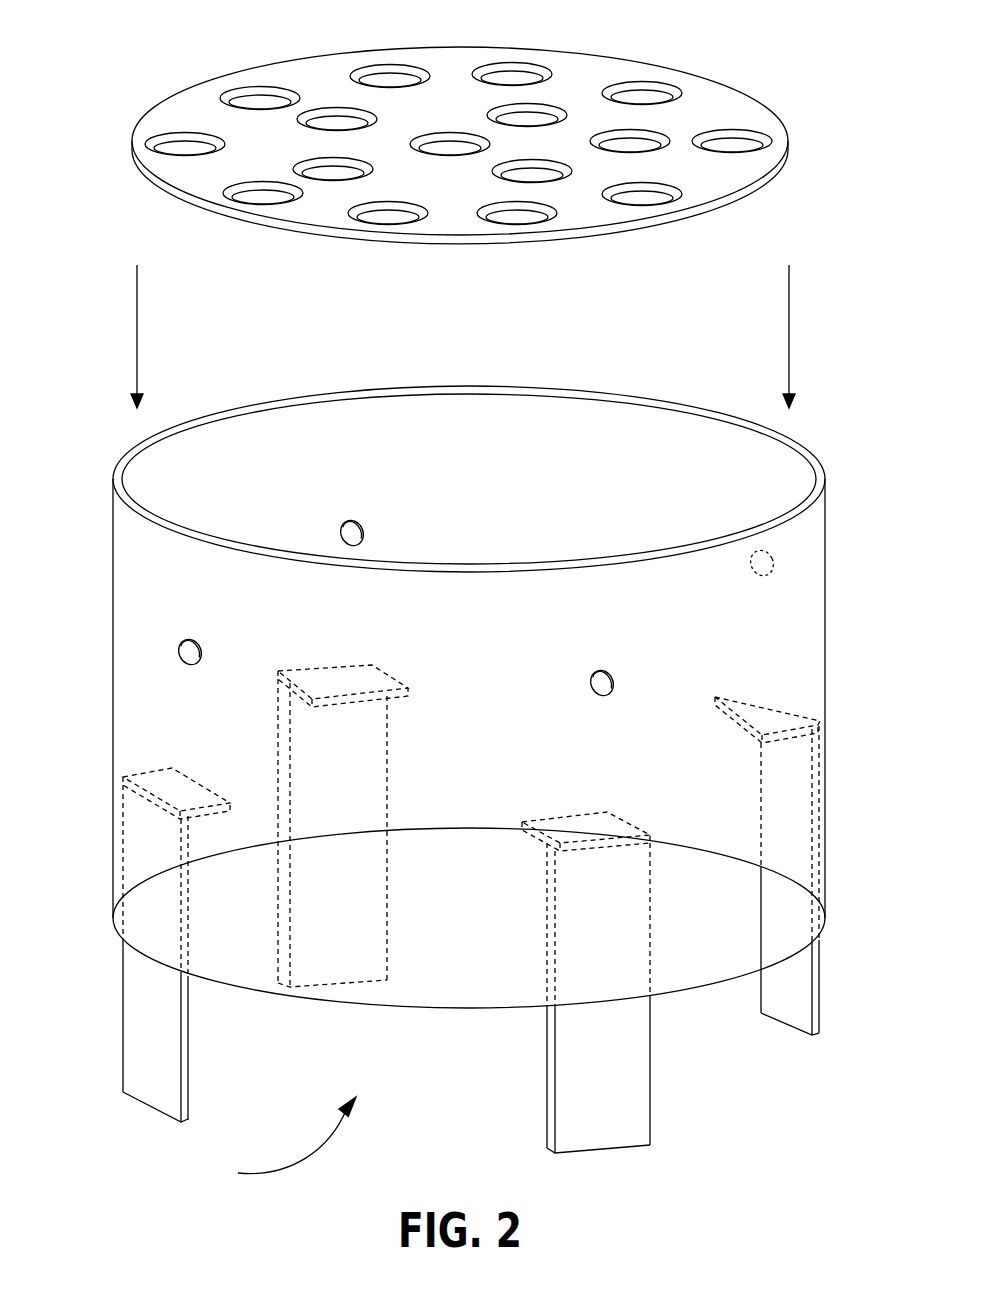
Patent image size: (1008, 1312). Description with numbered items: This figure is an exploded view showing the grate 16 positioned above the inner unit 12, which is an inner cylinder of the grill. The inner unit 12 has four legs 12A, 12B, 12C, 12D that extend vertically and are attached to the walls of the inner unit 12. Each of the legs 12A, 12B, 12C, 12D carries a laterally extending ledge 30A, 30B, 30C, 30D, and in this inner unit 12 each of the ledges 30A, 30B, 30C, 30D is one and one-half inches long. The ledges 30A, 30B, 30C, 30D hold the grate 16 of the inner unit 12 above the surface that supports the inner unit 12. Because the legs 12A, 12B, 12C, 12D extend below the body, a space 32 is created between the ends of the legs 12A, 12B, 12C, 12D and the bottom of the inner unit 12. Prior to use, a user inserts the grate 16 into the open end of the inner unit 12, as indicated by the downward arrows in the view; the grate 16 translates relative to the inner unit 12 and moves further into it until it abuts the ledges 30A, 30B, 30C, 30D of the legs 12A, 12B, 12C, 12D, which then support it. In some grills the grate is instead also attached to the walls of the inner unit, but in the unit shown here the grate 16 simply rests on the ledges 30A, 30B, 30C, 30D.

The grate 16 is at (598, 66).
The inner unit 12 is at (815, 523).
The leg 12A is at (188, 1045).
The leg 12B is at (652, 1107).
The leg 12C is at (783, 1008).
The leg 12D is at (388, 768).
The ledge 30A is at (163, 767).
The ledge 30B is at (597, 823).
The ledge 30C is at (768, 700).
The ledge 30D is at (347, 683).
The space 32 is at (279, 1142).